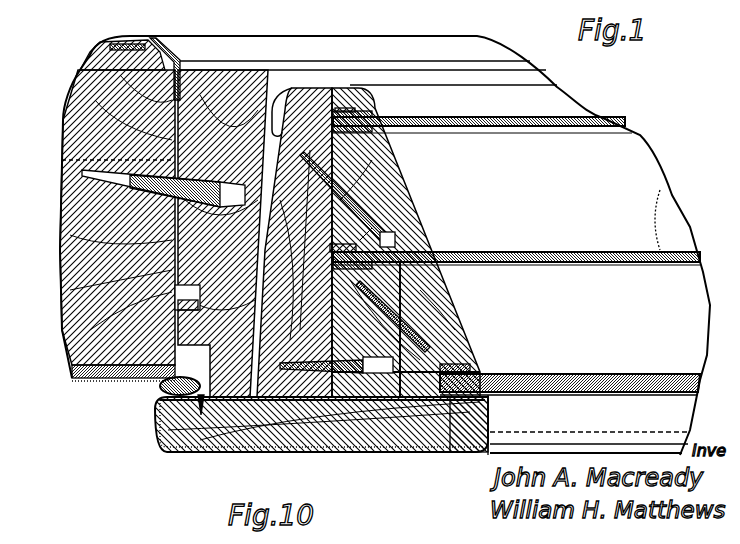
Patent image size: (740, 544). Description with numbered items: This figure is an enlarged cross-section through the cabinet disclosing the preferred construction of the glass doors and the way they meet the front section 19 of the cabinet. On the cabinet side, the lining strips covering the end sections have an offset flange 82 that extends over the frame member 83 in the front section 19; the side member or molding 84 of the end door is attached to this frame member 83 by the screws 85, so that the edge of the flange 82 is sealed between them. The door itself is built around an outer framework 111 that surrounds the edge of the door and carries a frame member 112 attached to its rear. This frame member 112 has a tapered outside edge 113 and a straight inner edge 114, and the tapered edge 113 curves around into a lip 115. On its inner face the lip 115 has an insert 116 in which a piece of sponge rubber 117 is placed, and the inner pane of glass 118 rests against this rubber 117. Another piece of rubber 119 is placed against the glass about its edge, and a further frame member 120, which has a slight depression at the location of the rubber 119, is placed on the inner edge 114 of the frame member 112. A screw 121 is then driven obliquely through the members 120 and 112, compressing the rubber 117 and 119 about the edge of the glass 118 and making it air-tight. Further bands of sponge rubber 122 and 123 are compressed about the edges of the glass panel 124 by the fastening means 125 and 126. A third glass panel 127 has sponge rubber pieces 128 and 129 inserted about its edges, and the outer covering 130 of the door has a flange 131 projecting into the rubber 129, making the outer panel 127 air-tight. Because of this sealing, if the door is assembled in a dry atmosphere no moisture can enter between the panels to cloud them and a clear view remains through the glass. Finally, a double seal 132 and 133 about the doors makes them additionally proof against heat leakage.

The front section 19 is at (62, 236).
The offset flange 82 is at (180, 66).
The frame member 83 is at (82, 90).
The side member or molding 84 is at (224, 72).
The screw 85 is at (70, 186).
The outer framework 111 is at (278, 402).
The frame member 112 is at (238, 402).
The tapered outside edge 113 is at (291, 98).
The straight inner edge 114 is at (340, 170).
The lip 115 is at (366, 112).
The insert 116 is at (348, 96).
The sponge rubber 117 is at (372, 114).
The inner pane of glass 118 is at (468, 117).
The rubber 119 is at (372, 133).
The frame member 120 is at (398, 196).
The screw 121 is at (375, 240).
The sponge rubber band 122 is at (356, 249).
The sponge rubber band 123 is at (415, 268).
The glass panel 124 is at (530, 254).
The fastening means 125 is at (450, 330).
The fastening means 126 is at (445, 310).
The glass panel 127 is at (598, 377).
The sponge rubber piece 128 is at (468, 366).
The sponge rubber piece 129 is at (498, 398).
The outer covering 130 is at (372, 446).
The flange 131 is at (486, 430).
The seal 132 is at (160, 395).
The seal 133 is at (160, 370).